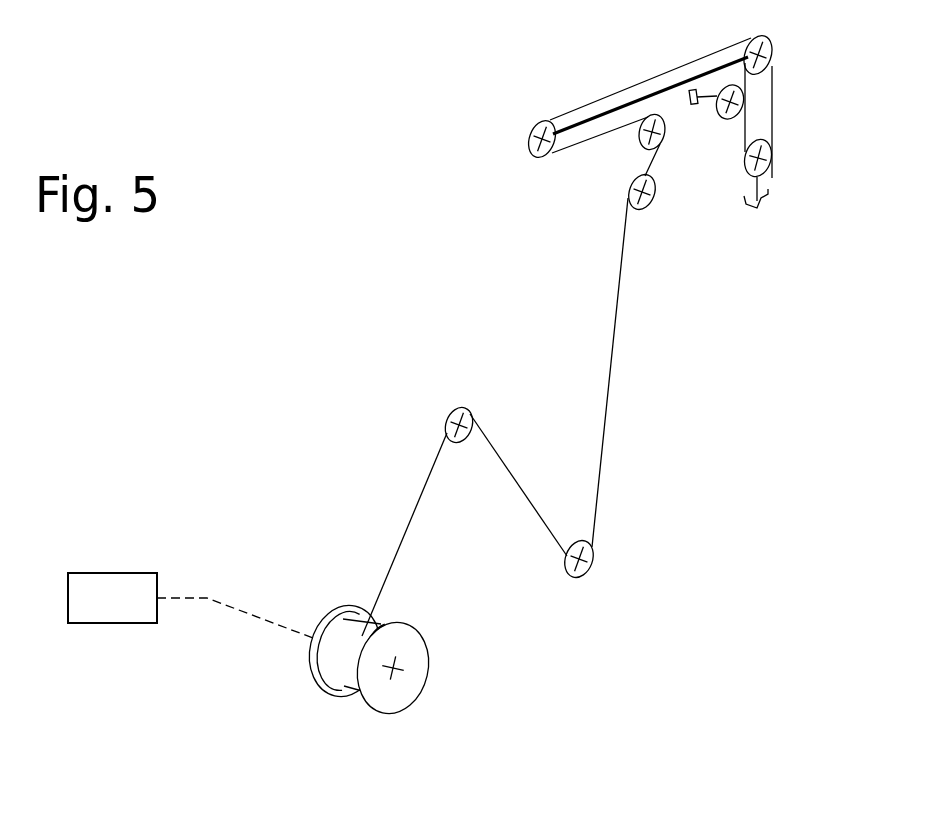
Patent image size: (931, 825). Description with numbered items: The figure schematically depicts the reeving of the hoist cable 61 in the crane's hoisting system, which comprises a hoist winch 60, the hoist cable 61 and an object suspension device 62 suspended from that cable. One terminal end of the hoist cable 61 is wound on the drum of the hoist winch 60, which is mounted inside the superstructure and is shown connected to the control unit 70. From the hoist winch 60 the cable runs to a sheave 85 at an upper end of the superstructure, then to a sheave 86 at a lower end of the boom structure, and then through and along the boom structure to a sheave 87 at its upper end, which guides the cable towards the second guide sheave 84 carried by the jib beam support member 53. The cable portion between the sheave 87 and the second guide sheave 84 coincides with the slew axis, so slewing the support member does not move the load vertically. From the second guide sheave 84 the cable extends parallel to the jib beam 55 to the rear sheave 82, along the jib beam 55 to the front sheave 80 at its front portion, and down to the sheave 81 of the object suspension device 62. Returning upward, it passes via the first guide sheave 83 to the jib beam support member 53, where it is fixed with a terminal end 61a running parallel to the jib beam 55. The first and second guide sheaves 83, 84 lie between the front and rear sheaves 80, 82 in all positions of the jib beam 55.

The jib beam support member 53 is at (688, 97).
The jib beam 55 is at (607, 112).
The hoist winch 60 is at (380, 697).
The hoist cable 61 is at (614, 372).
The terminal end 61a is at (712, 109).
The object suspension device 62 is at (768, 194).
The control unit 70 is at (112, 590).
The front sheave 80 is at (752, 38).
The sheave 81 is at (768, 163).
The rear sheave 82 is at (531, 131).
The first guide sheave 83 is at (745, 88).
The second guide sheave 84 is at (638, 138).
The sheave 85 is at (452, 416).
The sheave 86 is at (584, 576).
The sheave 87 is at (648, 201).